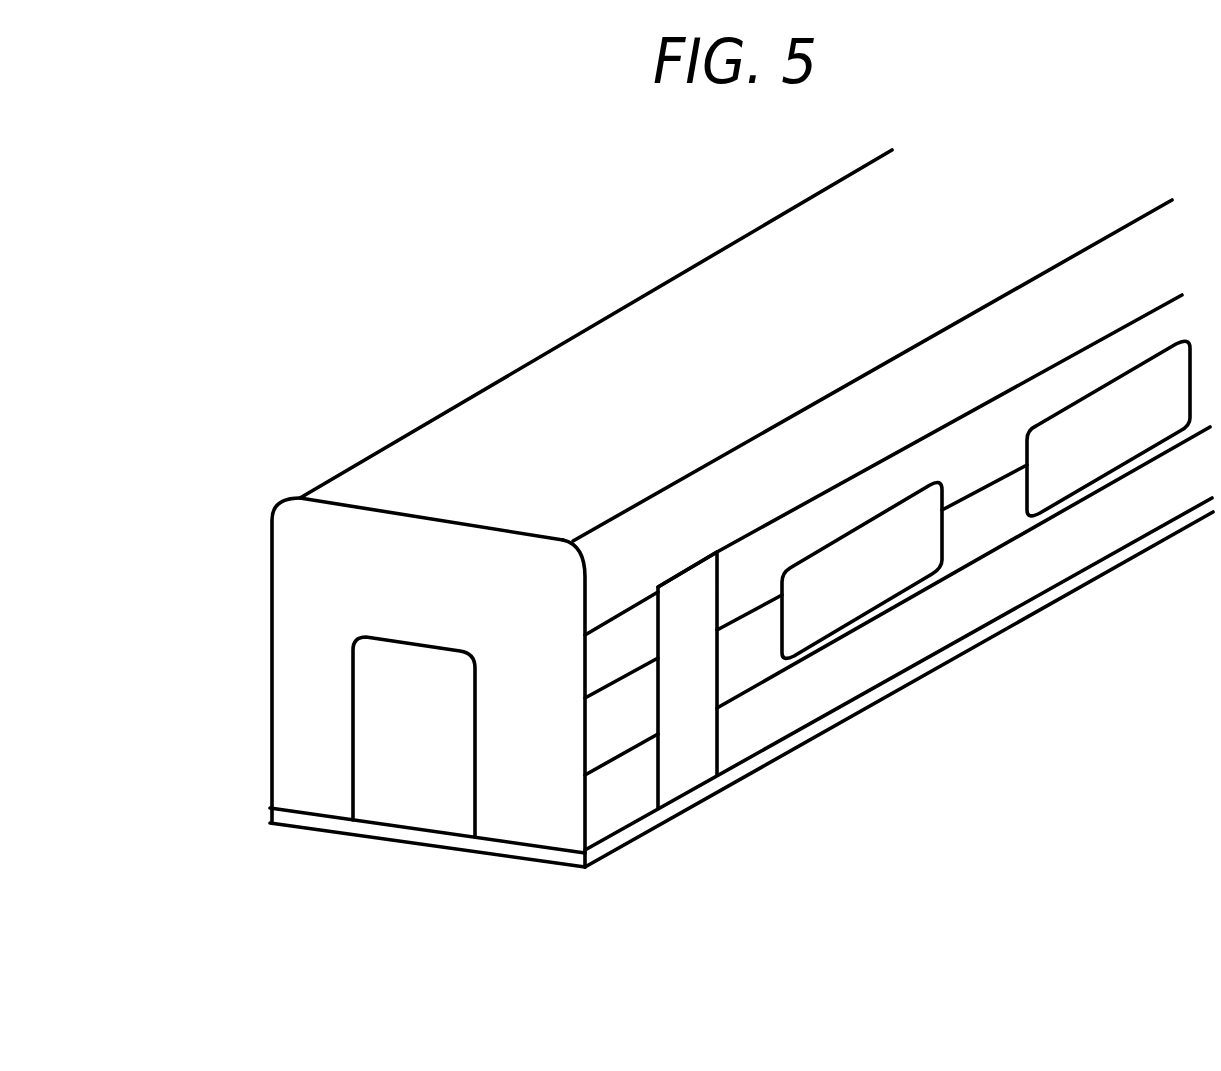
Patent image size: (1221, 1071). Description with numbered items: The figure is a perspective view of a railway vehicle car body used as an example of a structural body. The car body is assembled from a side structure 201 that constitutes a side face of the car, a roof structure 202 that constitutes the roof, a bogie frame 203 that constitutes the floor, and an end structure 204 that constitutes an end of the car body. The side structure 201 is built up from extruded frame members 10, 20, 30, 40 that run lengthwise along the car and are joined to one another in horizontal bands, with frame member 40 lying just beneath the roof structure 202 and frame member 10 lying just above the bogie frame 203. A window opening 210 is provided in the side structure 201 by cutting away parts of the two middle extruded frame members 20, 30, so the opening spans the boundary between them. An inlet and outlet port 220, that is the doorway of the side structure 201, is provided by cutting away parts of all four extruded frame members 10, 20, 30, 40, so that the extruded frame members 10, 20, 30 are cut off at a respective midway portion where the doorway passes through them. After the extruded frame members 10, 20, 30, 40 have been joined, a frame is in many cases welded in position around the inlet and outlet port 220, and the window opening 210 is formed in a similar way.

The extruded frame member 10 is at (877, 663).
The extruded frame member 20 is at (743, 667).
The extruded frame member 30 is at (962, 460).
The extruded frame member 40 is at (847, 430).
The side structure 201 is at (1077, 548).
The roof structure 202 is at (500, 462).
The bogie frame 203 is at (422, 831).
The end structure 204 is at (345, 578).
The window opening 210 is at (900, 563).
The inlet and outlet port 220 is at (700, 762).